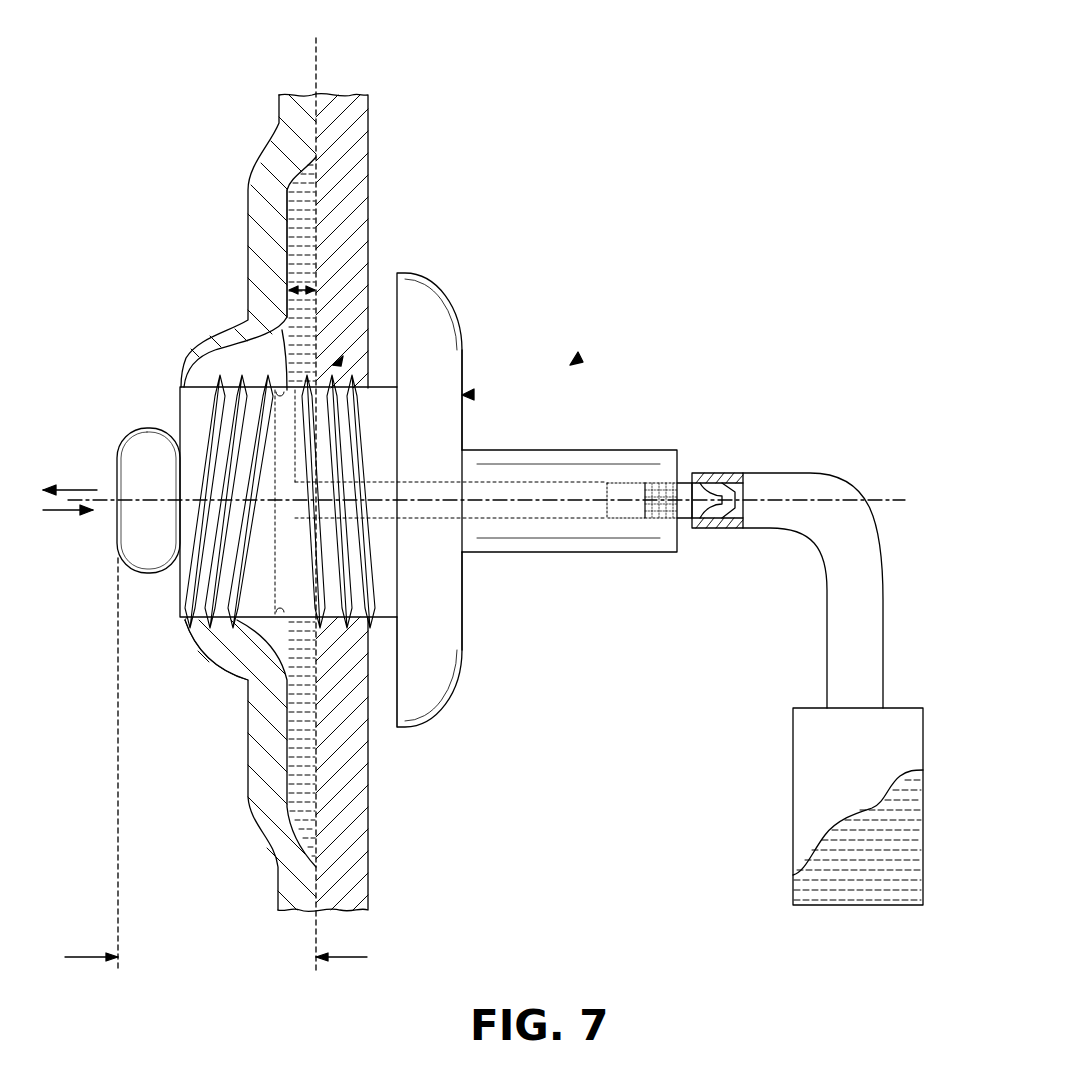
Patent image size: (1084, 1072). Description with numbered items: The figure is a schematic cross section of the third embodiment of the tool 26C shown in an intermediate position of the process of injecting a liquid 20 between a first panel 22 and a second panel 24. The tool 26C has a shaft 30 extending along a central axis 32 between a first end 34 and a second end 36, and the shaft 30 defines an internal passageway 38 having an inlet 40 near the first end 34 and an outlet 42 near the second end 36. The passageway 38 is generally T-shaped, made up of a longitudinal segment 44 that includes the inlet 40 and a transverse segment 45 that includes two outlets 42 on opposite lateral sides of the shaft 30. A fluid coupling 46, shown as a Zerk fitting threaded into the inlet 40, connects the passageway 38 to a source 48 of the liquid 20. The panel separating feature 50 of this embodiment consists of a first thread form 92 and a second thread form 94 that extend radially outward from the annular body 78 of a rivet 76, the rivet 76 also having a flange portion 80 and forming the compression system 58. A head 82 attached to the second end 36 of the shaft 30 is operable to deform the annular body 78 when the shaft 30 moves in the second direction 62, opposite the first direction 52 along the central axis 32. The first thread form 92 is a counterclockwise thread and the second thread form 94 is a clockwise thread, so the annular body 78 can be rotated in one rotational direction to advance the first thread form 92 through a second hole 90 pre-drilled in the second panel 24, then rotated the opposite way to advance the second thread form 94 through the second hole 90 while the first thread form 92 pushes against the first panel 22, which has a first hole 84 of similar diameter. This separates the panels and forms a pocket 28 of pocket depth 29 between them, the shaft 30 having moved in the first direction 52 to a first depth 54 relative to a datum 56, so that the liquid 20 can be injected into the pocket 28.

The liquid 20 is at (310, 200).
The first panel 22 is at (303, 135).
The second panel 24 is at (355, 123).
The third embodiment of the tool 26C is at (574, 360).
The pocket 28 is at (303, 270).
The pocket depth 29 is at (300, 288).
The shaft 30 is at (608, 463).
The central axis 32 is at (895, 496).
The first end 34 is at (677, 544).
The second end 36 is at (178, 527).
The internal passageway 38 is at (573, 510).
The inlet 40 is at (683, 478).
The outlet 42 is at (243, 385).
The longitudinal segment 44 is at (537, 480).
The transverse segment 45 is at (297, 442).
The fluid coupling 46 is at (718, 482).
The source 48 is at (873, 905).
The panel separating feature 50 is at (282, 388).
The first direction 52 is at (65, 490).
The first depth 54 is at (335, 957).
The datum 56 is at (316, 72).
The compression system 58 is at (336, 362).
The second direction 62 is at (52, 510).
The rivet 76 is at (464, 394).
The annular body 78 is at (197, 388).
The flange portion 80 is at (430, 315).
The head 82 is at (150, 452).
The first hole 84 is at (185, 618).
The second hole 90 is at (393, 620).
The first thread form 92 is at (178, 603).
The second thread form 94 is at (370, 580).